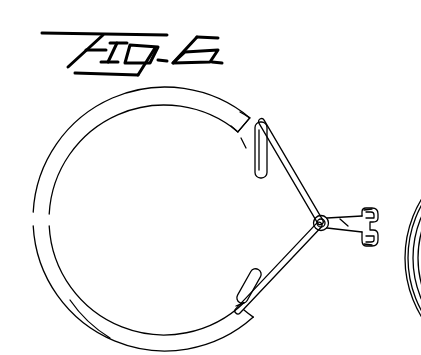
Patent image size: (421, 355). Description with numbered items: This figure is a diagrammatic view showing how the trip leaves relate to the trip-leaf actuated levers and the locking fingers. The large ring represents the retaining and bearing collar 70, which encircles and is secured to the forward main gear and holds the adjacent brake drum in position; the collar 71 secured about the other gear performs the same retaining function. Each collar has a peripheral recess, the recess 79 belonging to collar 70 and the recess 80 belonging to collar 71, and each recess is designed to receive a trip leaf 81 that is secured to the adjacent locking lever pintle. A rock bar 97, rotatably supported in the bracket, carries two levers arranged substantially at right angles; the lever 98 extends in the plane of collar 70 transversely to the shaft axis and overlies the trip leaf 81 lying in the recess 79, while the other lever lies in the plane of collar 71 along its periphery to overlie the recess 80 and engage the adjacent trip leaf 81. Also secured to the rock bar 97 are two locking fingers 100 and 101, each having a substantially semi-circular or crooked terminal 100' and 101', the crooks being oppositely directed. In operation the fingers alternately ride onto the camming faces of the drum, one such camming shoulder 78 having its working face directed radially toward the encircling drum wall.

The retaining and bearing collar 70 is at (208, 115).
The bearing and drum retaining collar 71 is at (200, 327).
The camming shoulder 78 is at (88, 354).
The recess of collar 70 79 is at (248, 122).
The recess of collar 71 80 is at (232, 300).
The trip leaf 81 is at (262, 160).
The rock bar 97 is at (325, 214).
The lever 98 is at (277, 145).
The locking finger 100 is at (361, 195).
The crooked terminal 100' is at (385, 197).
The locking finger 101 is at (326, 247).
The crooked terminal 101' is at (365, 258).